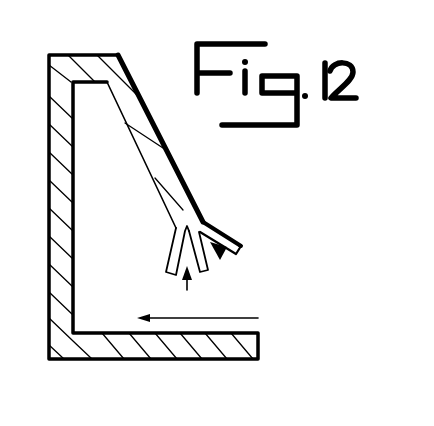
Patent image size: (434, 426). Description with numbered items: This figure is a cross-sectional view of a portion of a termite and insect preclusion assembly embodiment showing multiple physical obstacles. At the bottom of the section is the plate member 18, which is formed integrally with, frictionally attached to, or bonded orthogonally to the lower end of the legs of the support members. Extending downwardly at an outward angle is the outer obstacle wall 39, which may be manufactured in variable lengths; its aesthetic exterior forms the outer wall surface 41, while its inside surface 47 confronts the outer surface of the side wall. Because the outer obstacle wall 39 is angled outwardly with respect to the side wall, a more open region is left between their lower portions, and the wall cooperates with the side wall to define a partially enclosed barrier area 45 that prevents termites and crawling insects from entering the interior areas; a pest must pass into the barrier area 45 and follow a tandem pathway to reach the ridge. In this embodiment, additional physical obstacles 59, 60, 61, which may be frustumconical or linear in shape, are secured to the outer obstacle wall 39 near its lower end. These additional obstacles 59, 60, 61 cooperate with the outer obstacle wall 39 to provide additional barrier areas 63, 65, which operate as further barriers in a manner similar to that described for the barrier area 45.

The plate member 18 is at (175, 345).
The outer obstacle wall 39 is at (160, 149).
The outer wall surface 41 is at (187, 203).
The barrier area 45 is at (219, 321).
The inside surface 47 is at (143, 158).
The additional physical obstacle 59 is at (168, 257).
The additional physical obstacle 60 is at (206, 272).
The additional physical obstacle 61 is at (236, 240).
The additional barrier area 63 is at (186, 292).
The additional barrier area 65 is at (223, 254).